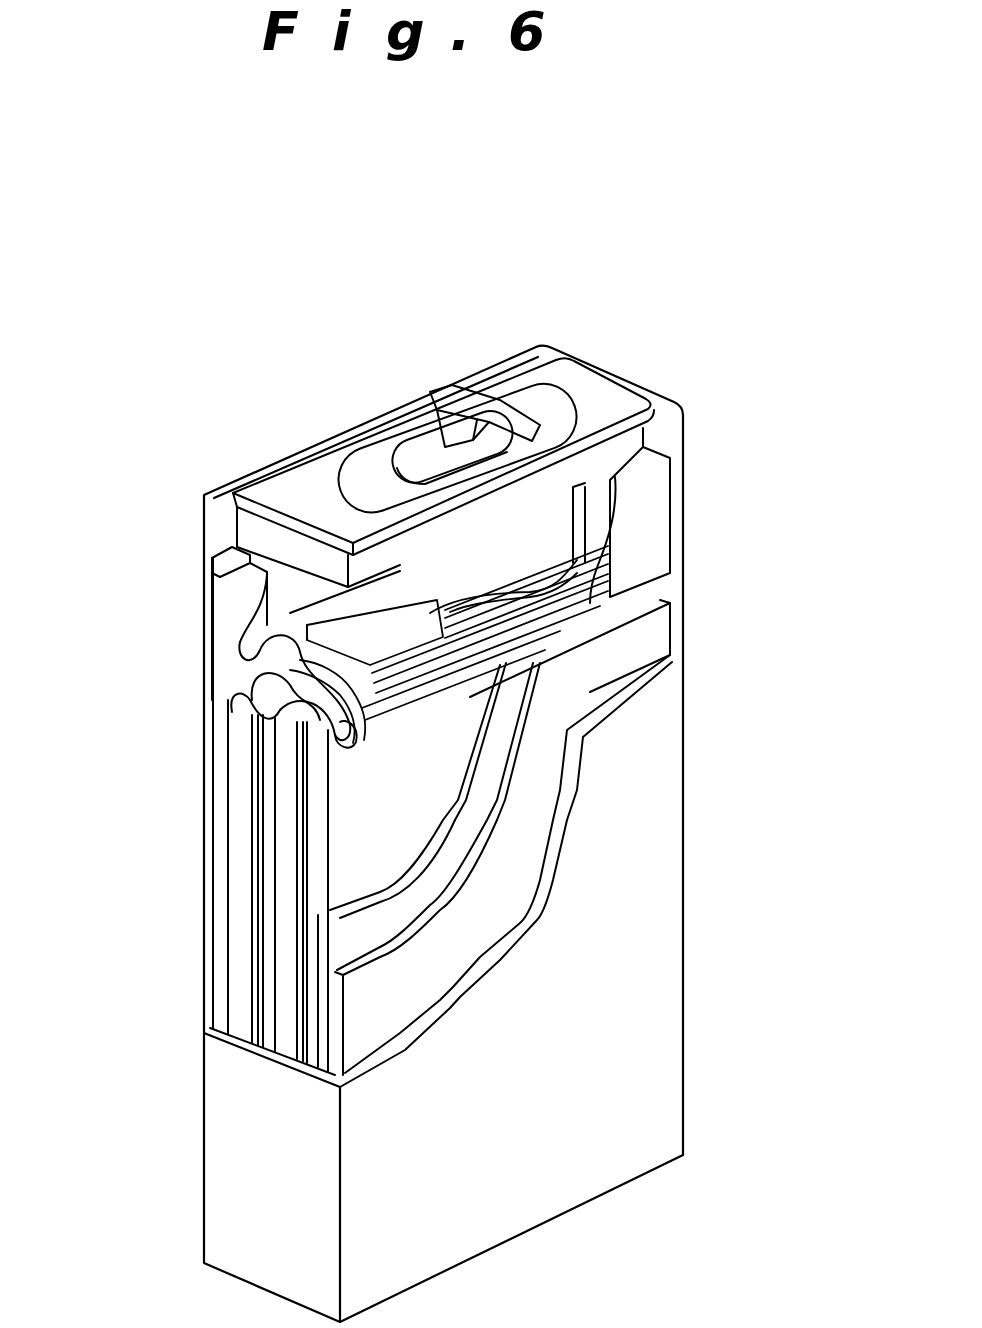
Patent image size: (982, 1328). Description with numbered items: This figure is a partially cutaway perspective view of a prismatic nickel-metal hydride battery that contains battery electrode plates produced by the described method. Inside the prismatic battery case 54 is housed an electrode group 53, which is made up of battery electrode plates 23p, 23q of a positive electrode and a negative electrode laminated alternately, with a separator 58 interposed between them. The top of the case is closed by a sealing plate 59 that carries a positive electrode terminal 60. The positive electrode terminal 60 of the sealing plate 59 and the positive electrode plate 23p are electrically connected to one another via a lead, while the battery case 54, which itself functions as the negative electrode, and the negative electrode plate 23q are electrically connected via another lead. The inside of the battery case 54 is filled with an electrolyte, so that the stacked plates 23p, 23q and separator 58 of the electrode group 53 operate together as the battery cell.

The prismatic battery case 54 is at (643, 760).
The sealing plate 59 is at (583, 405).
The positive electrode terminal 60 is at (427, 440).
The electrode group 53 is at (218, 763).
The separator 58 is at (360, 935).
The positive electrode plate 23p is at (360, 825).
The negative electrode plate 23q is at (470, 921).